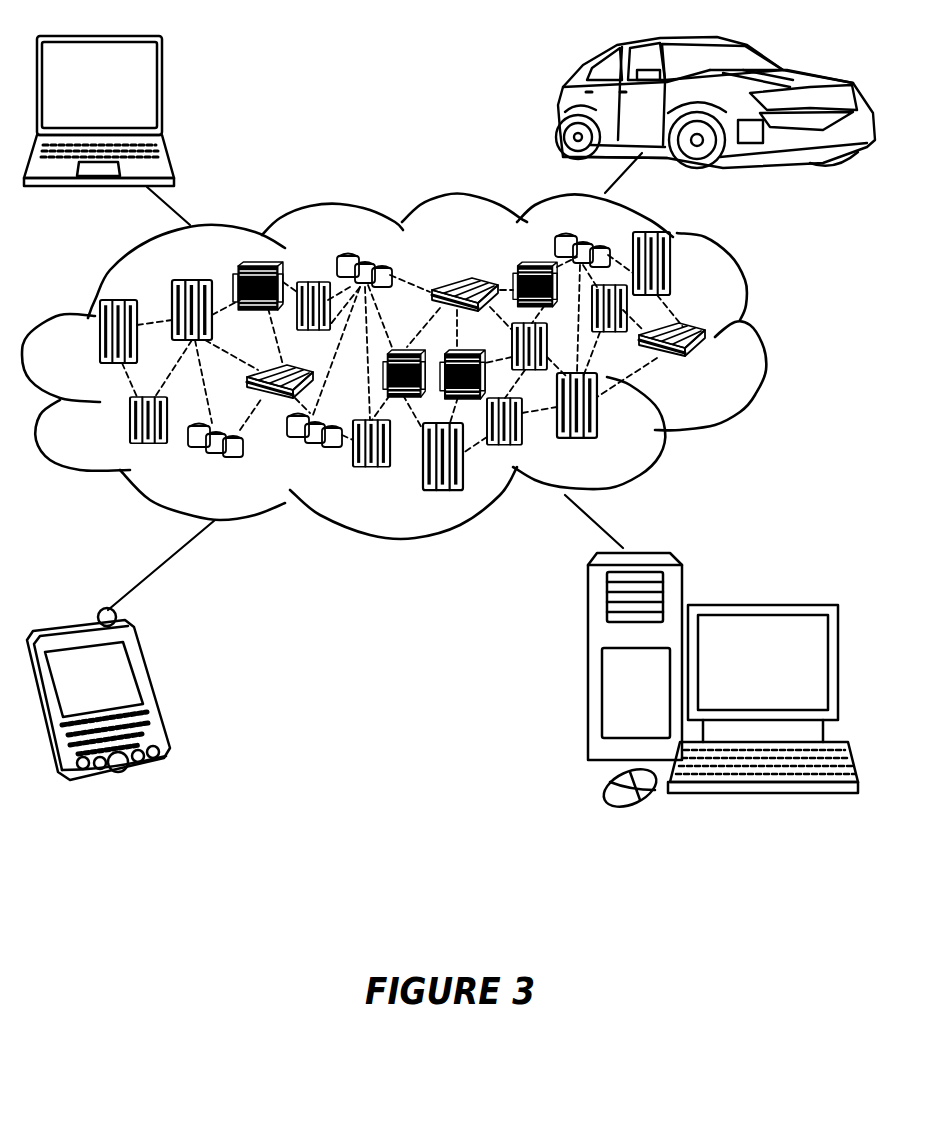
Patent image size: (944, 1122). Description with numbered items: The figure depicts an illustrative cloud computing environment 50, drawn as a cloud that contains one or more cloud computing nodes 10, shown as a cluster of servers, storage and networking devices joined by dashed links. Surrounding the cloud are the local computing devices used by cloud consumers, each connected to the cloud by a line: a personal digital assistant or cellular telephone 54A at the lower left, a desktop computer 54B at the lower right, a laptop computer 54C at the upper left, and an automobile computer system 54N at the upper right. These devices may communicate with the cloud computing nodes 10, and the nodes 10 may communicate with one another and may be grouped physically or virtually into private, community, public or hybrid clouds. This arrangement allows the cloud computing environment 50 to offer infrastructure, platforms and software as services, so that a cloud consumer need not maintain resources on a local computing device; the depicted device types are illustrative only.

The cloud computing node 10 is at (712, 368).
The cloud computing environment 50 is at (762, 342).
The personal digital assistant or cellular telephone 54A is at (152, 690).
The desktop computer 54B is at (760, 603).
The laptop computer 54C is at (163, 91).
The automobile computer system 54N is at (560, 105).